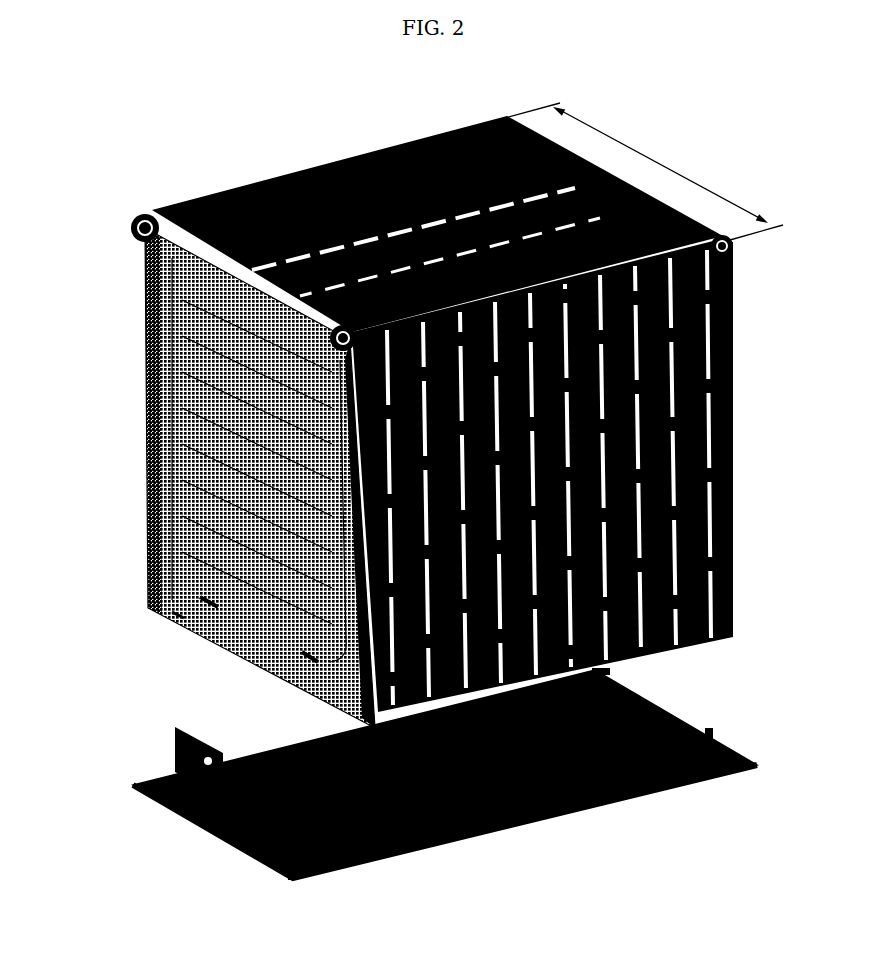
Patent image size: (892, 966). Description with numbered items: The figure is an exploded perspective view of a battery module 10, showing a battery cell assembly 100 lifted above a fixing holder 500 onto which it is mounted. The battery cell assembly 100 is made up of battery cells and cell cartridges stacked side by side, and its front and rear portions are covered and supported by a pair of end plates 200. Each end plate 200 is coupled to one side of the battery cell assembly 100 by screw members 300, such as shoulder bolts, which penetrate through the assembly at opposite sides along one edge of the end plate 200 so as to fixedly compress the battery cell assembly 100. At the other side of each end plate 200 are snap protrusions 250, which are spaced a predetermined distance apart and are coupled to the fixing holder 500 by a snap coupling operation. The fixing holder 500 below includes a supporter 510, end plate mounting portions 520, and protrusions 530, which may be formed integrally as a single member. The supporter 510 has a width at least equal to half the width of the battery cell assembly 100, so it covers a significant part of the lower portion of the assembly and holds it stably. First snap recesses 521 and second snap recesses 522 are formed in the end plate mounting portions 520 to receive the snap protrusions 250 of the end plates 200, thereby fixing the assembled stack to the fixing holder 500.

The battery module 10 is at (147, 140).
The battery cell assembly 100 is at (292, 157).
The end plate 200 is at (152, 334).
The snap protrusion 250 is at (305, 664).
The screw member 300 is at (130, 226).
The fixing holder 500 is at (215, 862).
The supporter 510 is at (510, 813).
The end plate mounting portion 520 is at (263, 813).
The first snap recess 521 is at (218, 755).
The second snap recess 522 is at (598, 669).
The protrusion 530 is at (292, 877).